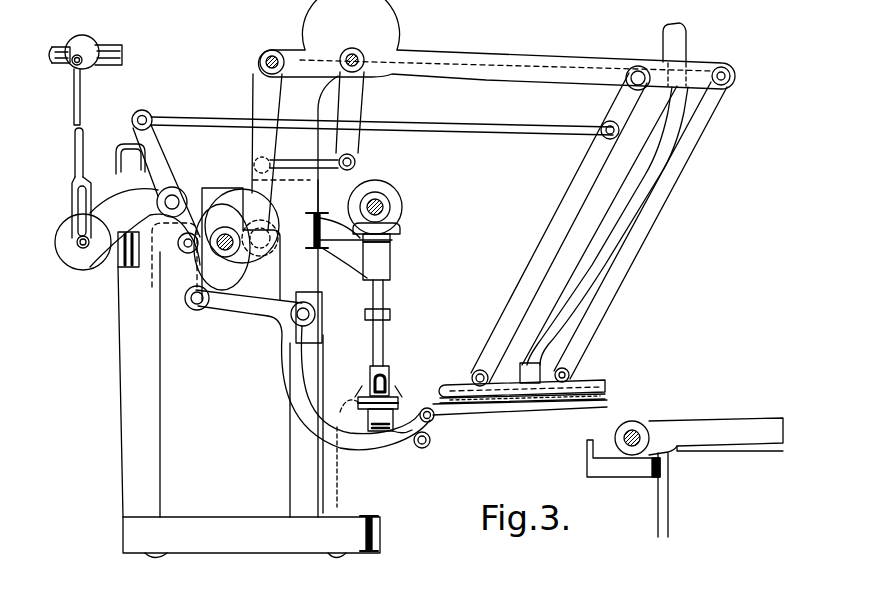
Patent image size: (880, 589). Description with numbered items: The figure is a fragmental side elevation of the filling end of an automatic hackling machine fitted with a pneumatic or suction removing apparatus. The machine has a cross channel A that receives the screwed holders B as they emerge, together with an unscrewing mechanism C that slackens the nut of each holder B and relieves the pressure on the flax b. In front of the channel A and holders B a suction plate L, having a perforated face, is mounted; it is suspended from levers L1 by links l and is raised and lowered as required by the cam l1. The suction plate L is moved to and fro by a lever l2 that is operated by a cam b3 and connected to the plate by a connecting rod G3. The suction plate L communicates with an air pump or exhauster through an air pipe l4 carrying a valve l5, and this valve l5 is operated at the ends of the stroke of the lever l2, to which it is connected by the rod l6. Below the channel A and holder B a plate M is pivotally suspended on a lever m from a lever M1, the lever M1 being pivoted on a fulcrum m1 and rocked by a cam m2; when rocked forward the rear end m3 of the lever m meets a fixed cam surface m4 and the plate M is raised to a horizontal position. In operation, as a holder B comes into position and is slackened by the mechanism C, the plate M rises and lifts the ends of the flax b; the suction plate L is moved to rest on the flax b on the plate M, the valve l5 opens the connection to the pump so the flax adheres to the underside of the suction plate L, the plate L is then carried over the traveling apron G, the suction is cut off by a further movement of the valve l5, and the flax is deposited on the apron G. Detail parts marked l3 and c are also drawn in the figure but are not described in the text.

The valve l5 is at (80, 46).
The rod l6 is at (80, 173).
The lever l2 is at (165, 180).
The cam l1 is at (218, 197).
The cam hub l3 is at (255, 262).
The cam b3 is at (250, 270).
The air pipe l4 is at (622, 197).
The links l is at (546, 254).
The levers L1 is at (453, 67).
The suction plate L is at (567, 392).
The connecting rod G3 is at (385, 128).
The traveling apron G is at (685, 462).
The unscrewing mechanism C is at (378, 263).
The lever M1 is at (297, 394).
The plate M is at (487, 413).
The lever m is at (517, 405).
The fulcrum m1 is at (314, 310).
The cam m2 is at (198, 268).
The rear end of lever m m3 is at (420, 443).
The fixed cam surface m4 is at (395, 428).
The flax b is at (343, 449).
The collar c is at (369, 398).
The screwed holders B is at (400, 382).
The cross channel A is at (378, 430).